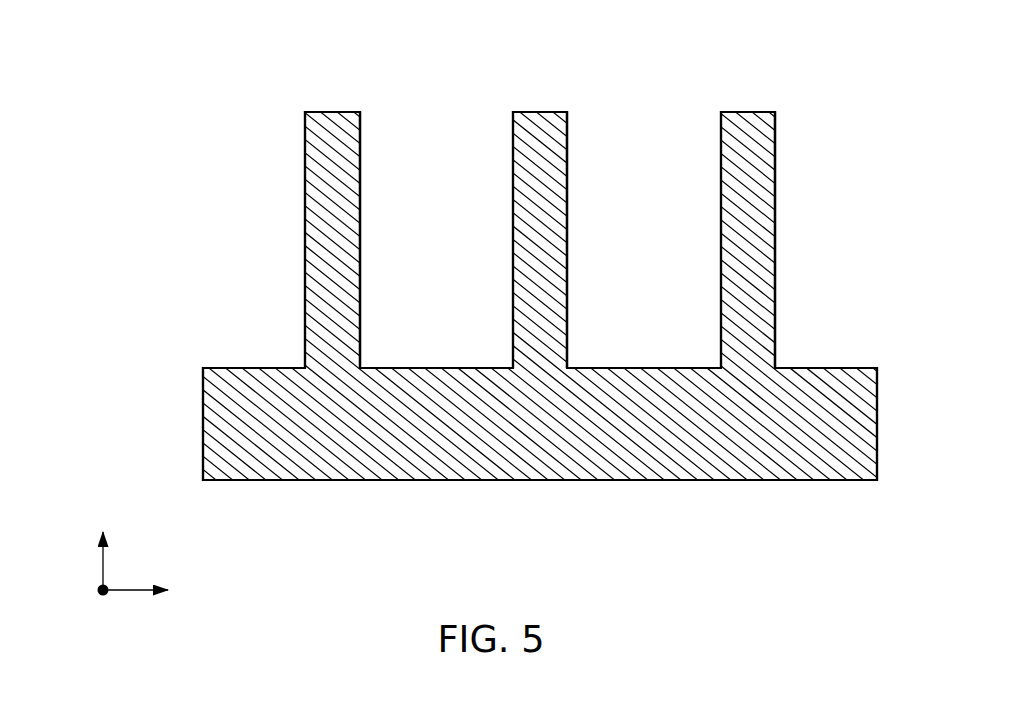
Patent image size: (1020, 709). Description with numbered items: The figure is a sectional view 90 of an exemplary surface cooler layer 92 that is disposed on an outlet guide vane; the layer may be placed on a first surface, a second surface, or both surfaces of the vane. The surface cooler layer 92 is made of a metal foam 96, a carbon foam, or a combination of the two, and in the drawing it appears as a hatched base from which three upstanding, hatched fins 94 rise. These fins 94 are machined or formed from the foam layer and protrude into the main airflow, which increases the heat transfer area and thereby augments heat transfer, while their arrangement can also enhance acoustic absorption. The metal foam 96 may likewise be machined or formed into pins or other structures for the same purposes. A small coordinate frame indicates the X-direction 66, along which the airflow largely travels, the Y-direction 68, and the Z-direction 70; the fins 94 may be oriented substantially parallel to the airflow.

The sectional view 90 is at (808, 52).
The surface cooler layer 92 is at (845, 387).
The fins 94 is at (295, 87).
The metal foam 96 is at (358, 249).
The X-direction 66 is at (171, 588).
The Y-direction 68 is at (107, 535).
The Z-direction 70 is at (98, 591).